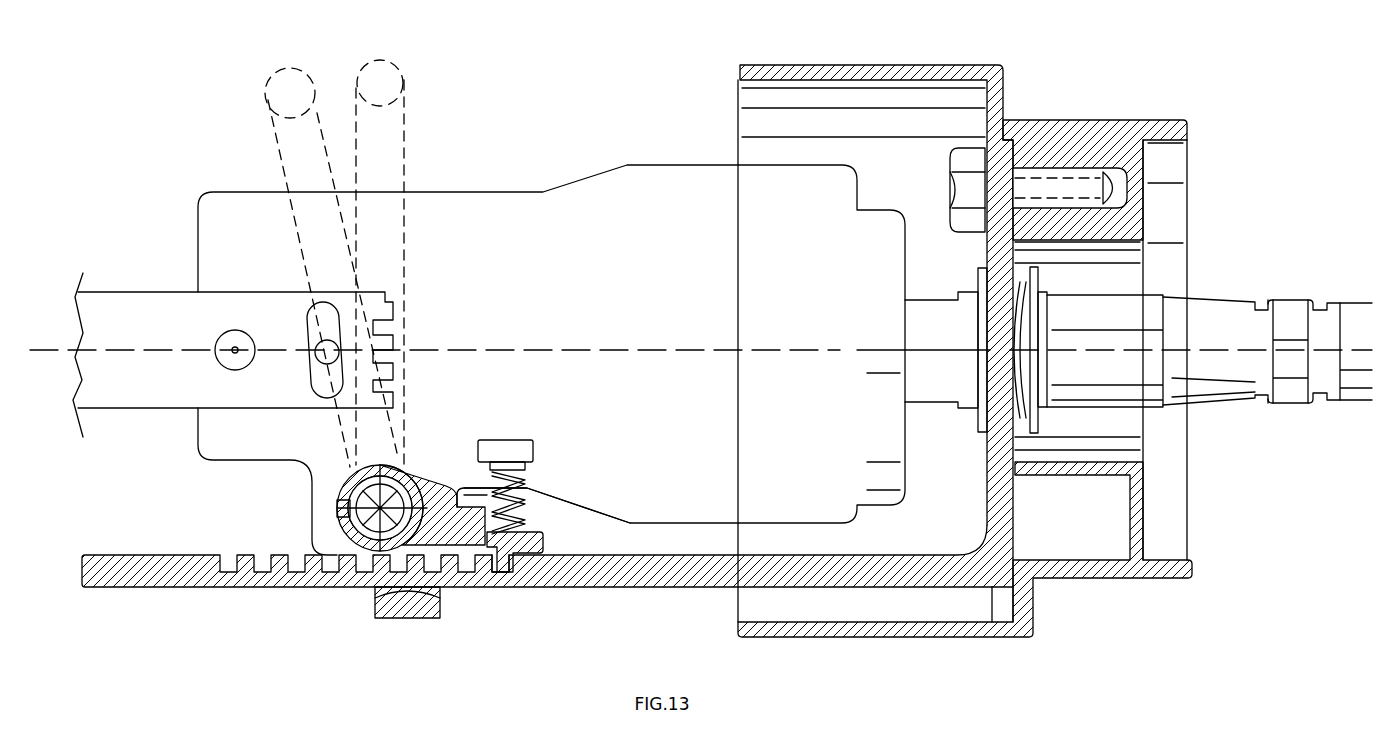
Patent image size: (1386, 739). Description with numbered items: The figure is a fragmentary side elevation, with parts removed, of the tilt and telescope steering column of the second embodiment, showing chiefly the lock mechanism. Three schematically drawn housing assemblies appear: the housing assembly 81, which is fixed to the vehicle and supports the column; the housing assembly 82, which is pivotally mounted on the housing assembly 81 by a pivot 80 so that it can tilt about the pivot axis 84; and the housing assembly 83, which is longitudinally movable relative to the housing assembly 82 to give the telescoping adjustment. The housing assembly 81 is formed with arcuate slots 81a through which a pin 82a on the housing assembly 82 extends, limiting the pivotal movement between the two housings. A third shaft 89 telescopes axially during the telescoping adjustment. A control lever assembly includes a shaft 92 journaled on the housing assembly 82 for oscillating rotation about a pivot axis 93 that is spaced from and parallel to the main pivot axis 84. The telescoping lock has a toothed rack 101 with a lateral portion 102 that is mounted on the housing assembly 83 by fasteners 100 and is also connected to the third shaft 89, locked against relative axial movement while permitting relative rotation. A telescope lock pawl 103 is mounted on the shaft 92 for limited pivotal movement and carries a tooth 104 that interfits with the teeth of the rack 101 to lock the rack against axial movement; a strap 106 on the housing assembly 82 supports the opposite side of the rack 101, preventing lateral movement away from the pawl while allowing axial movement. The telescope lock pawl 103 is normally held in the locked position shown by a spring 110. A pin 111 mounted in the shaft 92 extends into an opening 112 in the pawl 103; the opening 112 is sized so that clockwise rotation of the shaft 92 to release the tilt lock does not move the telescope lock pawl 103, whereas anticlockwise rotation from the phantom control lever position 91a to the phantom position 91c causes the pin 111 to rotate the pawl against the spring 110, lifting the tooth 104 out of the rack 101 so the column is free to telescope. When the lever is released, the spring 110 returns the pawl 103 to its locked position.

The pivot 80 is at (237, 352).
The housing assembly 81 is at (145, 300).
The arcuate slots 81a is at (322, 297).
The housing assembly 82 is at (522, 205).
The pin 82a is at (327, 360).
The housing assembly 83 is at (1058, 135).
The pivot axis 84 is at (233, 355).
The third shaft 89 is at (938, 317).
The control lever position 91a is at (380, 138).
The phantom position 91c is at (295, 155).
The shaft 92 is at (412, 480).
The pivot axis 93 is at (355, 535).
The fasteners 100 is at (967, 188).
The toothed rack 101 is at (487, 567).
The lateral portion 102 is at (1000, 438).
The telescope lock pawl 103 is at (440, 490).
The tooth 104 is at (537, 537).
The strap 106 is at (407, 603).
The spring 110 is at (527, 497).
The pin 111 is at (340, 500).
The opening 112 is at (345, 483).